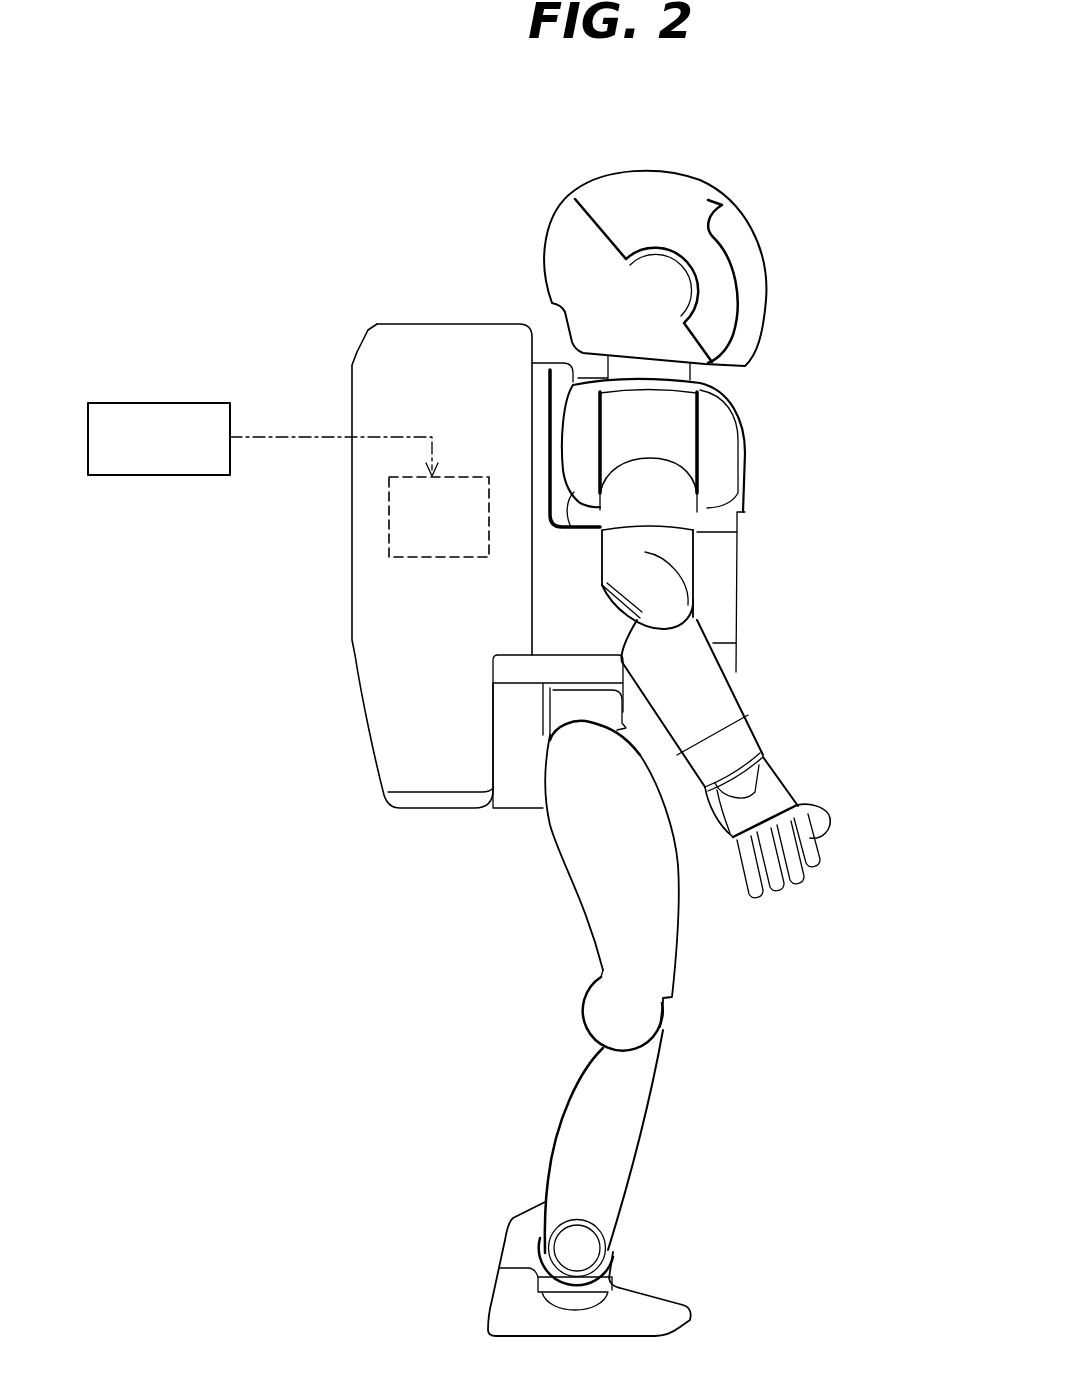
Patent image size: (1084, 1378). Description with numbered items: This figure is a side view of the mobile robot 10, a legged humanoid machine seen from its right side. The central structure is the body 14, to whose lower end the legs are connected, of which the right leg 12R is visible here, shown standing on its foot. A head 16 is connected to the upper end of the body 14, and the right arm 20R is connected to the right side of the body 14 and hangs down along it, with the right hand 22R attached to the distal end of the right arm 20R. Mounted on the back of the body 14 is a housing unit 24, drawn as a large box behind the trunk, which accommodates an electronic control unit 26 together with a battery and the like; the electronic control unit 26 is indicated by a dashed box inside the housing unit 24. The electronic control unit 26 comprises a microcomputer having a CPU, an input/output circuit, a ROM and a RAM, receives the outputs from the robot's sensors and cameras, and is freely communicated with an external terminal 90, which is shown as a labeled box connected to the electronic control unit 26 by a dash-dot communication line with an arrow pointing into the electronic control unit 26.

The mobile robot 10 is at (758, 415).
The right leg 12R is at (688, 1022).
The body 14 is at (728, 577).
The head 16 is at (620, 176).
The right arm 20R is at (762, 695).
The right hand 22R is at (775, 792).
The housing unit 24 is at (430, 323).
The electronic control unit 26 is at (389, 520).
The external terminal 90 is at (148, 403).